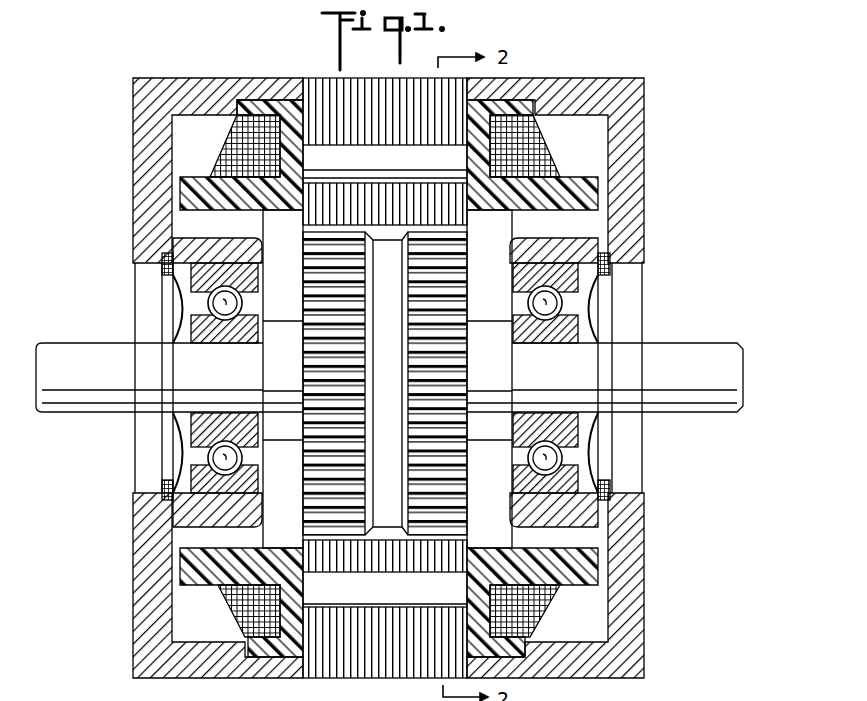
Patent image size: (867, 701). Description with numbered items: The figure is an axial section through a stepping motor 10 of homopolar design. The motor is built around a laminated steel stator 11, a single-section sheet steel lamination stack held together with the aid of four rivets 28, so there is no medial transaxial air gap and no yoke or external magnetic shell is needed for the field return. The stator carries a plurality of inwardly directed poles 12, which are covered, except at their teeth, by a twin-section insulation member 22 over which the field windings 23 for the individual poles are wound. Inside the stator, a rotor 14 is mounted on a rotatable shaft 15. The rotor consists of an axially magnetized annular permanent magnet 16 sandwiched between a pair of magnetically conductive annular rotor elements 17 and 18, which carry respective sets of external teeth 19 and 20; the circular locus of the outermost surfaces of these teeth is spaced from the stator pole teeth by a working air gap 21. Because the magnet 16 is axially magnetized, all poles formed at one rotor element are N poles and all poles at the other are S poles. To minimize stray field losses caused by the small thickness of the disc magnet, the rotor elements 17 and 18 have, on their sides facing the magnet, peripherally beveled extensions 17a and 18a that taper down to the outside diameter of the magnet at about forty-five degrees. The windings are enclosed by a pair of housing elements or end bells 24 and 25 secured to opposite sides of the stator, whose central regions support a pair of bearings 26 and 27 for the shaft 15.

The stepping motor 10 is at (662, 157).
The stator 11 is at (336, 680).
The poles 12 is at (466, 212).
The rotor 14 is at (481, 457).
The shaft 15 is at (704, 344).
The permanent magnet 16 is at (382, 492).
The rotor element 17 is at (460, 255).
The beveled extension 17a is at (403, 286).
The rotor element 18 is at (303, 270).
The beveled extension 18a is at (372, 336).
The external teeth 19 is at (453, 323).
The external teeth 20 is at (313, 404).
The working air gap 21 is at (463, 533).
The insulation member 22 is at (577, 178).
The field windings 23 is at (537, 120).
The end bell 24 is at (637, 219).
The end bell 25 is at (135, 204).
The bearing 26 is at (572, 476).
The bearing 27 is at (190, 477).
The rivets 28 is at (392, 598).